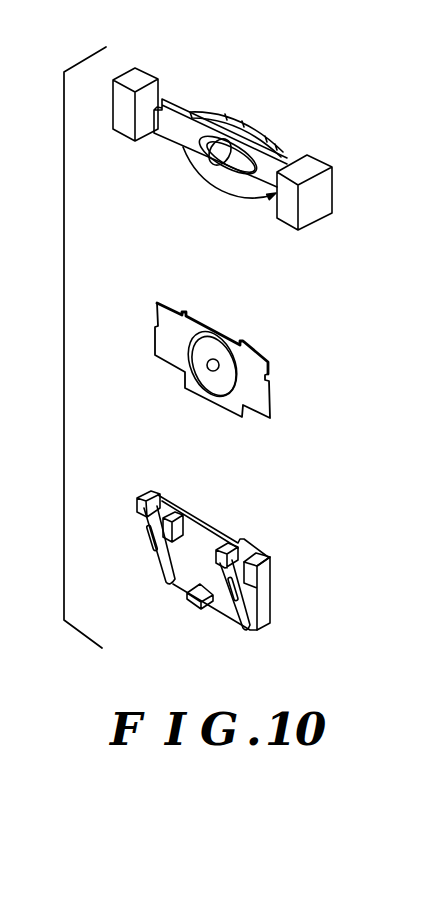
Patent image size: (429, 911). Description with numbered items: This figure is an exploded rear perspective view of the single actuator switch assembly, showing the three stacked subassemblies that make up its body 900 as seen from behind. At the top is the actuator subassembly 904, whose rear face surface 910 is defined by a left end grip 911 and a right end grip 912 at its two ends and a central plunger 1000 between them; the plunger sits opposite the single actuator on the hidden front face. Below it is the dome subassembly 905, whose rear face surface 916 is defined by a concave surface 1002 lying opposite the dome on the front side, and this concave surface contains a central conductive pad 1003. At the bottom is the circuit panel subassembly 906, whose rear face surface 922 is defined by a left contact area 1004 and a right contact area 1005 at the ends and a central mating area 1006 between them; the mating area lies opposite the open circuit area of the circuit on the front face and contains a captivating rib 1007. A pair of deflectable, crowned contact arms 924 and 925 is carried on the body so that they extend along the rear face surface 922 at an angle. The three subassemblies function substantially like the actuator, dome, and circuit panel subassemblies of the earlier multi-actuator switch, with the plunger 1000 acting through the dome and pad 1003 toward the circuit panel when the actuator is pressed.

The body 900 is at (62, 348).
The actuator subassembly 904 is at (268, 136).
The dome subassembly 905 is at (259, 361).
The circuit panel subassembly 906 is at (220, 577).
The rear face surface 910 is at (175, 133).
The left end grip 911 is at (136, 80).
The right end grip 912 is at (305, 167).
The rear face surface 916 is at (255, 373).
The rear face surface 922 is at (257, 608).
The contact arm 924 is at (157, 562).
The contact arm 925 is at (249, 623).
The central plunger 1000 is at (223, 160).
The concave surface 1002 is at (210, 378).
The central conductive pad 1003 is at (213, 361).
The left contact area 1004 is at (167, 572).
The right contact area 1005 is at (255, 593).
The central mating area 1006 is at (196, 538).
The captivating rib 1007 is at (201, 596).